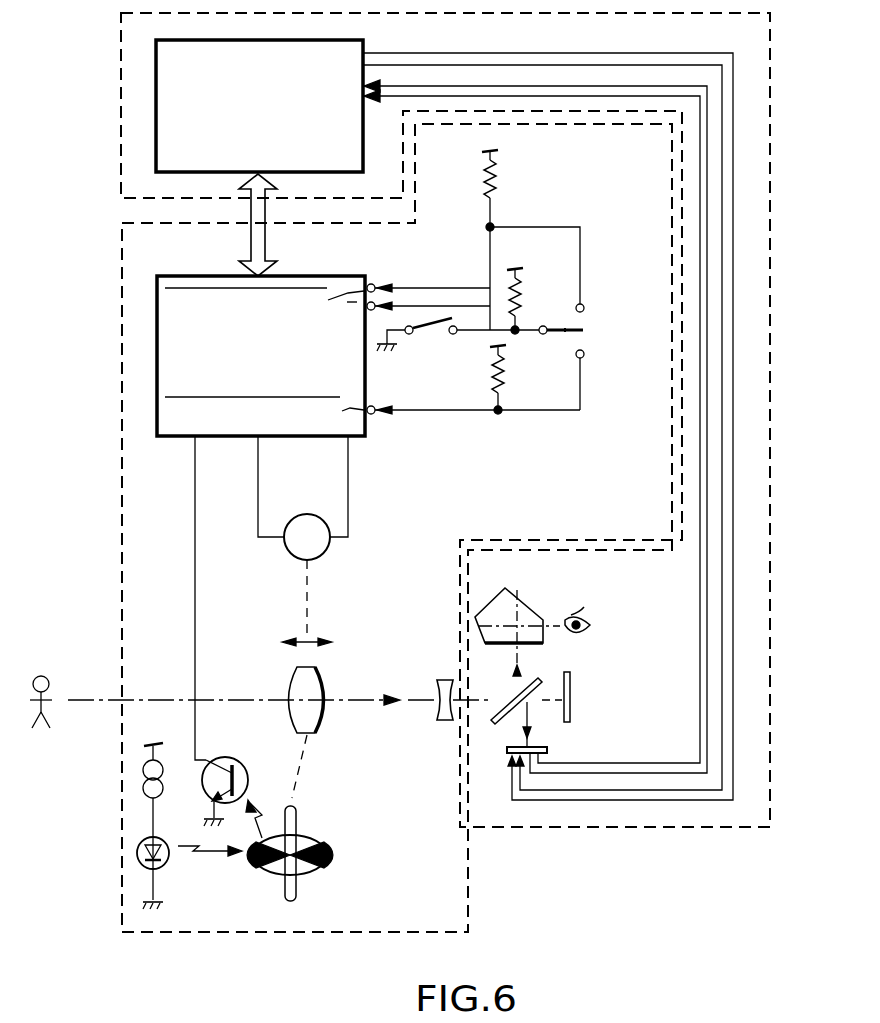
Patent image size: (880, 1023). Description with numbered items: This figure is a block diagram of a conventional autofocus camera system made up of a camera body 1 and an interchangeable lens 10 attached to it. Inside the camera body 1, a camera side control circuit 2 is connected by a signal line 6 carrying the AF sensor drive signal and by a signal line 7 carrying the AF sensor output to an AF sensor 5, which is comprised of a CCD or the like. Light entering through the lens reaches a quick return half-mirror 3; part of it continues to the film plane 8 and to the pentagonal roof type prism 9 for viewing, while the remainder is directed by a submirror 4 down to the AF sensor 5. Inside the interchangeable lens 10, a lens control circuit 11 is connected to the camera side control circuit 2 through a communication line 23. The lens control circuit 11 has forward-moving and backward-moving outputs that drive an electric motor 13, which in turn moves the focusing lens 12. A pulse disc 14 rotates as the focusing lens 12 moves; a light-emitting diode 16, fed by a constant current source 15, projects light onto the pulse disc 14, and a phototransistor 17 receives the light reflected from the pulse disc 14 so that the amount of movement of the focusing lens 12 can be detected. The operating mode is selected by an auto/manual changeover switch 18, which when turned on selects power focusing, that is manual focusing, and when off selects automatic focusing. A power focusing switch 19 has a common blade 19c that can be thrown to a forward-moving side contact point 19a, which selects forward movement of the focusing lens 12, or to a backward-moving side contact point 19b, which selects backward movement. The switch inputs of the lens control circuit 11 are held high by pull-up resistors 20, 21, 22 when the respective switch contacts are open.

The camera body 1 is at (532, 828).
The camera side control circuit 2 is at (366, 49).
The quick return half-mirror 3 is at (540, 678).
The submirror 4 is at (532, 706).
The AF sensor 5 is at (507, 749).
The signal line for the AF sensor drive signal 6 is at (608, 797).
The signal line for the AF sensor output 7 is at (661, 770).
The film plane 8 is at (571, 712).
The pentagonal roof type prism 9 is at (510, 598).
The interchangeable lens 10 is at (314, 933).
The lens control circuit 11 is at (170, 437).
The focusing lens 12 is at (325, 686).
The electric motor 13 is at (330, 548).
The pulse disc 14 is at (327, 853).
The constant current source 15 is at (163, 787).
The light-emitting diode 16 is at (169, 862).
The phototransistor 17 is at (224, 758).
The auto/manual changeover switch 18 is at (436, 329).
The power focusing switch 19 is at (572, 336).
The forward-moving side contact point 19a is at (584, 308).
The backward-moving side contact point 19b is at (584, 354).
The switch blade 19c is at (566, 325).
The pull-up resistor 20 is at (497, 183).
The pull-up resistor 21 is at (491, 382).
The pull-up resistor 22 is at (521, 300).
The communication line 23 is at (266, 250).